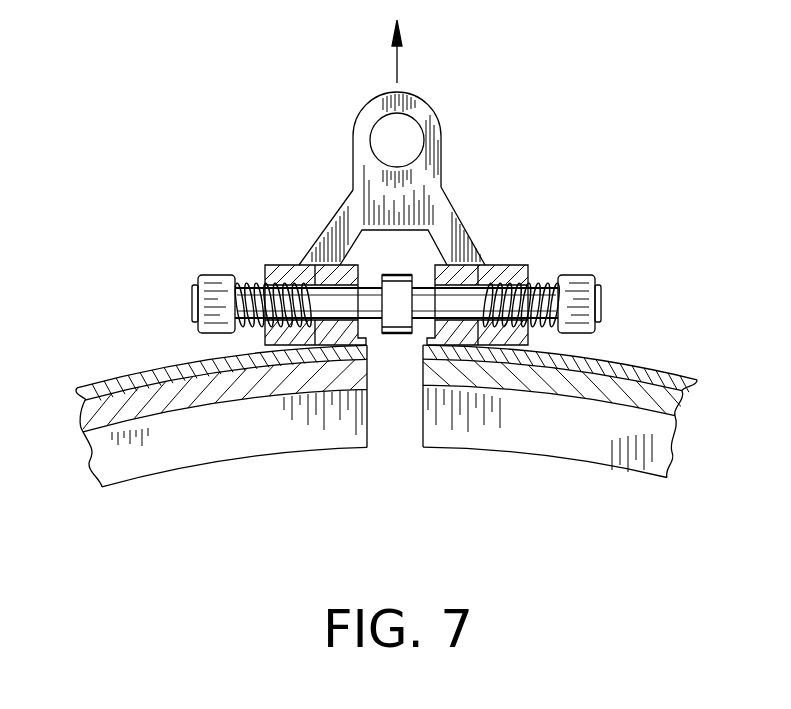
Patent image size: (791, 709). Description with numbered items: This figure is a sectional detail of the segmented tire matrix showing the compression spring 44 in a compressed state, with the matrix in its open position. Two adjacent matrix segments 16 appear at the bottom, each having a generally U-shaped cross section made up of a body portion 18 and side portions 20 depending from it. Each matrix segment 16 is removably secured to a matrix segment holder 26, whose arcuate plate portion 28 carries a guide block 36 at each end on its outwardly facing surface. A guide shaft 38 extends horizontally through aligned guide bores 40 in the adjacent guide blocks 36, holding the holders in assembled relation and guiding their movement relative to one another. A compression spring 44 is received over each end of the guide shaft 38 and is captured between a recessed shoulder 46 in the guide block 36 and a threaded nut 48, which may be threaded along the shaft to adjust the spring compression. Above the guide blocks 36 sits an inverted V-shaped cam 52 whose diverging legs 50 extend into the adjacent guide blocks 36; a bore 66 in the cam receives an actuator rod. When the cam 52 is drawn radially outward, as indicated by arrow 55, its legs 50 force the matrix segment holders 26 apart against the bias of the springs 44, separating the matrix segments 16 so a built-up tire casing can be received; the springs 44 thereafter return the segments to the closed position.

The matrix segment 16 is at (148, 492).
The body portion 18 is at (260, 388).
The side portion 20 is at (196, 445).
The matrix segment holder 26 is at (131, 348).
The arcuate plate portion 28 is at (98, 386).
The guide block 36 is at (267, 241).
The guide shaft 38 is at (382, 318).
The guide bore 40 is at (347, 255).
The compression spring 44 is at (252, 278).
The recessed shoulder 46 is at (290, 264).
The threaded nut 48 is at (205, 276).
The diverging leg 50 is at (345, 200).
The inverted V-shaped cam 52 is at (357, 150).
The arrow 55 is at (393, 66).
The aligned bore 66 is at (420, 130).